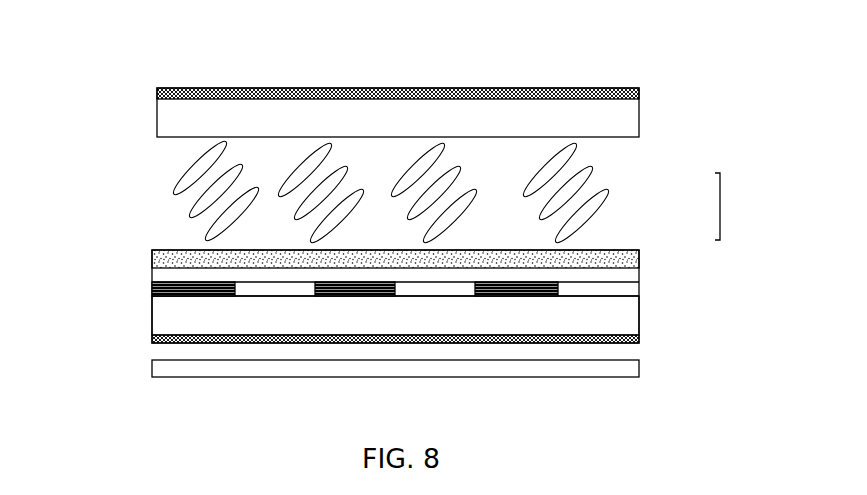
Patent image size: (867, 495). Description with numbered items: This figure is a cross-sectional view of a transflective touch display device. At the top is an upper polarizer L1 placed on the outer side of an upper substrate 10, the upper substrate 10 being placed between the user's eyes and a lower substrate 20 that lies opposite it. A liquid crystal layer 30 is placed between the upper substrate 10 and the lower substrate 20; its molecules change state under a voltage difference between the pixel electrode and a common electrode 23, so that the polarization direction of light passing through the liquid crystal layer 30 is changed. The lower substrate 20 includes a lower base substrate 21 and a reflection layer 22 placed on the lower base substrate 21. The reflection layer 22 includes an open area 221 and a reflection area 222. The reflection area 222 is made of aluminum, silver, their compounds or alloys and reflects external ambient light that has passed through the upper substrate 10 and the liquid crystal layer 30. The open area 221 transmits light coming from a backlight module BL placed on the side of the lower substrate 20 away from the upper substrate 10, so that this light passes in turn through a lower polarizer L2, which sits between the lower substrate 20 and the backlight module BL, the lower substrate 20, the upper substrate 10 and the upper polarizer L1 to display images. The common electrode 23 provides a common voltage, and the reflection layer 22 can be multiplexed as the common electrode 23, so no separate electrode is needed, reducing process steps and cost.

The upper substrate 10 is at (185, 122).
The upper polarizer L1 is at (602, 90).
The liquid crystal layer 30 is at (148, 140).
The lower substrate 20 is at (143, 250).
The reflection layer 22 is at (732, 206).
The reflection area 222 is at (582, 252).
The open area 221 is at (603, 292).
The common electrode 23 is at (553, 281).
The lower base substrate 21 is at (603, 320).
The lower polarizer L2 is at (637, 341).
The backlight module BL is at (627, 368).